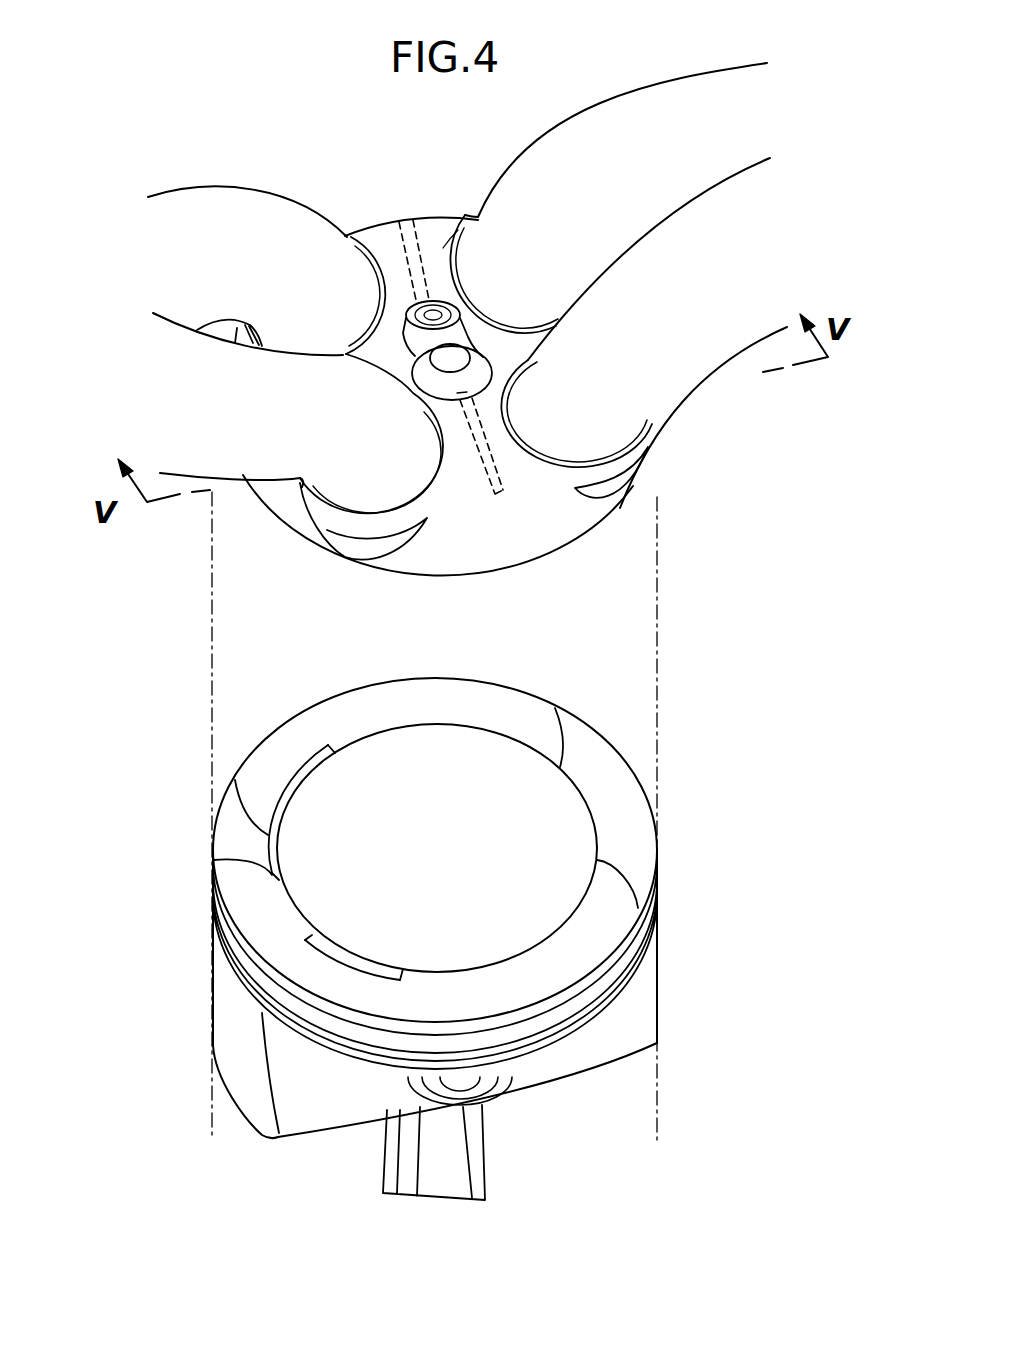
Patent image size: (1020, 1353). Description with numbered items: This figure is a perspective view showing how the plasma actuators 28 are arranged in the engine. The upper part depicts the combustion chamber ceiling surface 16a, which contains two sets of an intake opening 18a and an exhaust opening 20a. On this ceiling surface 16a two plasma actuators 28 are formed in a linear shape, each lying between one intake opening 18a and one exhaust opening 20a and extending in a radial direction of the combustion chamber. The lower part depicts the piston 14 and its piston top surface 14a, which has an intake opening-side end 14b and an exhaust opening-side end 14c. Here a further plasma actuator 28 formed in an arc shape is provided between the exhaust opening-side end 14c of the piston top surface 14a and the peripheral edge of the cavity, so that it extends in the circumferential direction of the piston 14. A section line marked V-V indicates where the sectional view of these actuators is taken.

The piston 14 is at (648, 975).
The piston top surface 14a is at (533, 990).
The intake opening-side end 14b is at (627, 793).
The exhaust opening-side end 14c is at (250, 922).
The combustion chamber ceiling surface 16a is at (470, 487).
The intake opening 18a is at (455, 222).
The exhaust opening 20a is at (381, 243).
The plasma actuator 28 is at (403, 221).